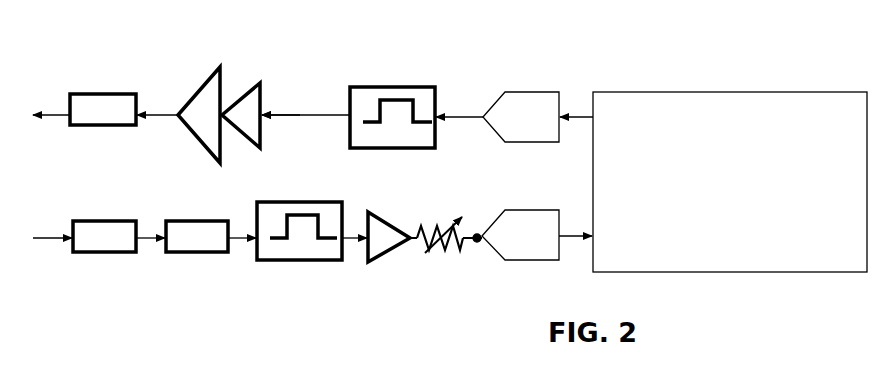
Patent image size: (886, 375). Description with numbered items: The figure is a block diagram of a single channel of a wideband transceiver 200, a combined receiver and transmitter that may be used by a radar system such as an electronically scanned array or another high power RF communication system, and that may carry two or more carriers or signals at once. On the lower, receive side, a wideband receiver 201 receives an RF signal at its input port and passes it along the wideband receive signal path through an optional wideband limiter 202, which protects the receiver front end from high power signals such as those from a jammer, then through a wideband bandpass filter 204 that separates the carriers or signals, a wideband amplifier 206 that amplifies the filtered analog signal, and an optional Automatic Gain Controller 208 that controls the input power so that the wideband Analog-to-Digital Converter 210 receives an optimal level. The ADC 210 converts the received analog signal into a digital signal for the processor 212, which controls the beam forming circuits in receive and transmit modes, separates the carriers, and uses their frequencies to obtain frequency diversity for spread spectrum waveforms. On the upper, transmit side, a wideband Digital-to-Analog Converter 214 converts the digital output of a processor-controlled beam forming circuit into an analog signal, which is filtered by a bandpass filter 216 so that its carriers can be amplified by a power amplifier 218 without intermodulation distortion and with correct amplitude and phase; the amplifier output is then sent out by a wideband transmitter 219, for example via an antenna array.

The wideband transceiver 200 is at (693, 83).
The wideband receiver 201 is at (113, 252).
The wideband limiter 202 is at (200, 252).
The wideband bandpass filter 204 is at (283, 260).
The wideband amplifier 206 is at (378, 270).
The Automatic Gain Controller (AGC) 208 is at (432, 262).
The wideband Analog-to-Digital Converter (ADC) 210 is at (535, 260).
The processor 212 is at (732, 272).
The wideband Digital-to-Analog Converter (DAC) 214 is at (527, 92).
The bandpass filter 216 is at (380, 92).
The power amplifier 218 is at (203, 82).
The wideband transmitter 219 is at (107, 94).